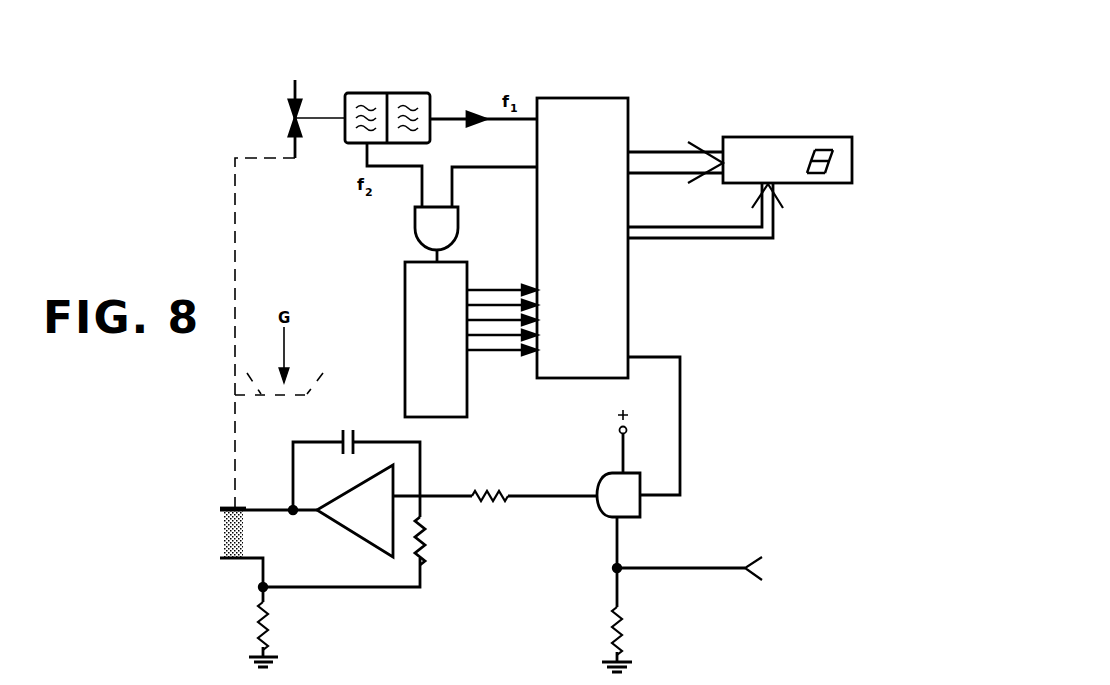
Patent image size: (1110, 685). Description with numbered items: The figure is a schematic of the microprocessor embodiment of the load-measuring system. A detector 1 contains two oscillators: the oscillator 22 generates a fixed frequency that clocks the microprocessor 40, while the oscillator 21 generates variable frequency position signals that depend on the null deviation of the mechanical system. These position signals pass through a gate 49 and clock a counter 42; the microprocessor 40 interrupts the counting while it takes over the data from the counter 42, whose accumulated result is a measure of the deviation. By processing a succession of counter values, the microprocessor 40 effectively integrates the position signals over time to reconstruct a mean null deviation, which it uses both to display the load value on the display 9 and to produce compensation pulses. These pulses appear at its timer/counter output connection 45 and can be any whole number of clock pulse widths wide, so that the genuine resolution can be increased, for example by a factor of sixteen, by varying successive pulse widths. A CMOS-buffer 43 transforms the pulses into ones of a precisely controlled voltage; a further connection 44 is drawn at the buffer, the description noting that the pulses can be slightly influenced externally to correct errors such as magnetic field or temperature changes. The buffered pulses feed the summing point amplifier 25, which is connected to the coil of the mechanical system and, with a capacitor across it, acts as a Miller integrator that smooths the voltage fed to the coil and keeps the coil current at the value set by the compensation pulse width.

The detector 1 is at (416, 89).
The oscillator 21 is at (366, 97).
The oscillator 22 is at (409, 97).
The microprocessor 40 is at (603, 98).
The display 9 is at (817, 137).
The AND gate 49 is at (420, 230).
The counter 42 is at (412, 332).
The timer/counter output connection 45 is at (682, 383).
The CMOS-buffer 43 is at (602, 512).
The output terminal 44 is at (677, 570).
The summing point amplifier 25 is at (357, 523).